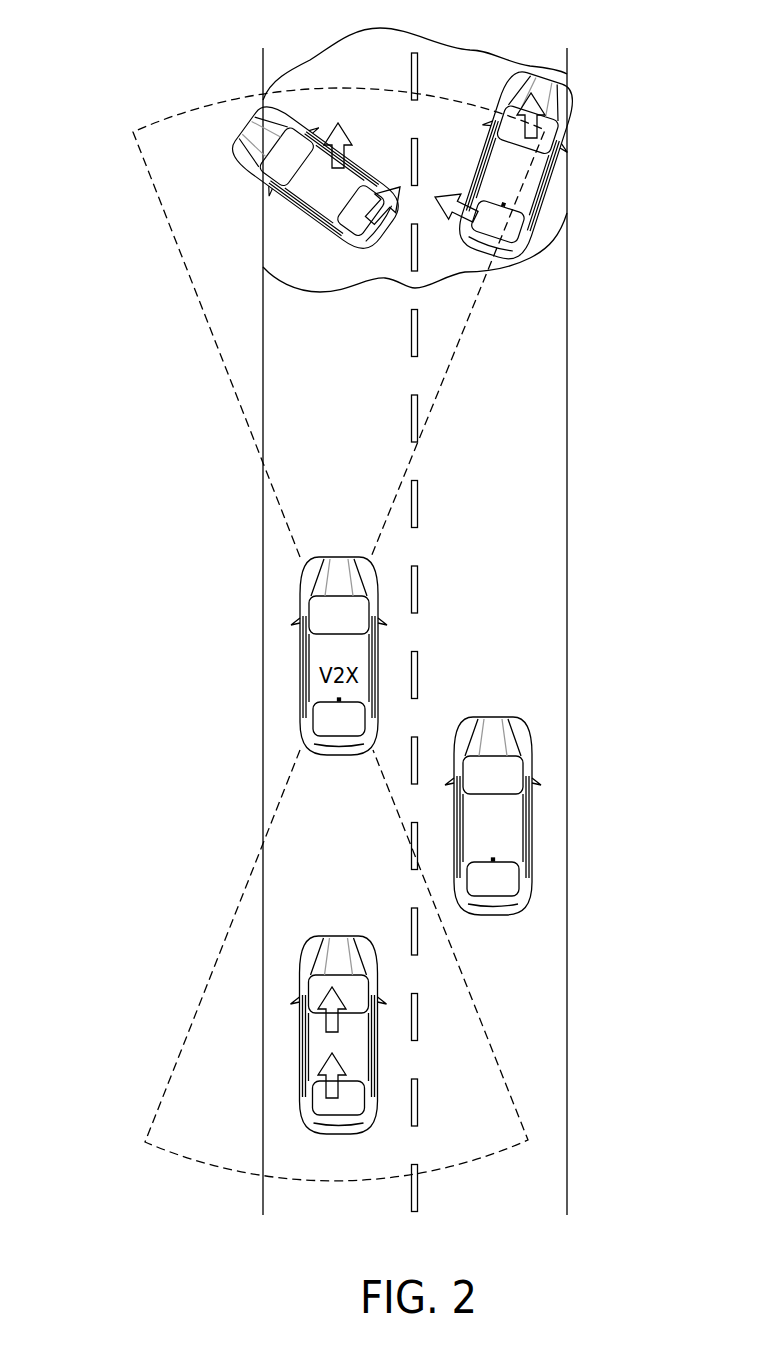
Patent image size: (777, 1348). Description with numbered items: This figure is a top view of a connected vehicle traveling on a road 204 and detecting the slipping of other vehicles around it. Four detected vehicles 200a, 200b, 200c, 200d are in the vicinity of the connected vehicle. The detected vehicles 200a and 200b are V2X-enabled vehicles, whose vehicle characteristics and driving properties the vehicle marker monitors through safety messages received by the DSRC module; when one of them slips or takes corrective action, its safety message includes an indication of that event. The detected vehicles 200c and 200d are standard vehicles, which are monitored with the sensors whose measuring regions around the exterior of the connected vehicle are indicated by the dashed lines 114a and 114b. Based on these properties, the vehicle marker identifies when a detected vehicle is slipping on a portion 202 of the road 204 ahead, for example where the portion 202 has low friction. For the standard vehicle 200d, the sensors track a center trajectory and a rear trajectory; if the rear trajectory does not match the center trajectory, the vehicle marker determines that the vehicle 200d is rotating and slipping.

The dashed lines 114a is at (152, 183).
The dashed lines 114b is at (173, 1072).
The detected vehicle 200a is at (532, 846).
The detected vehicle 200b is at (580, 112).
The detected vehicle 200c is at (375, 1074).
The detected vehicle 200d is at (238, 116).
The portion of the road 202 is at (476, 62).
The road 204 is at (538, 442).